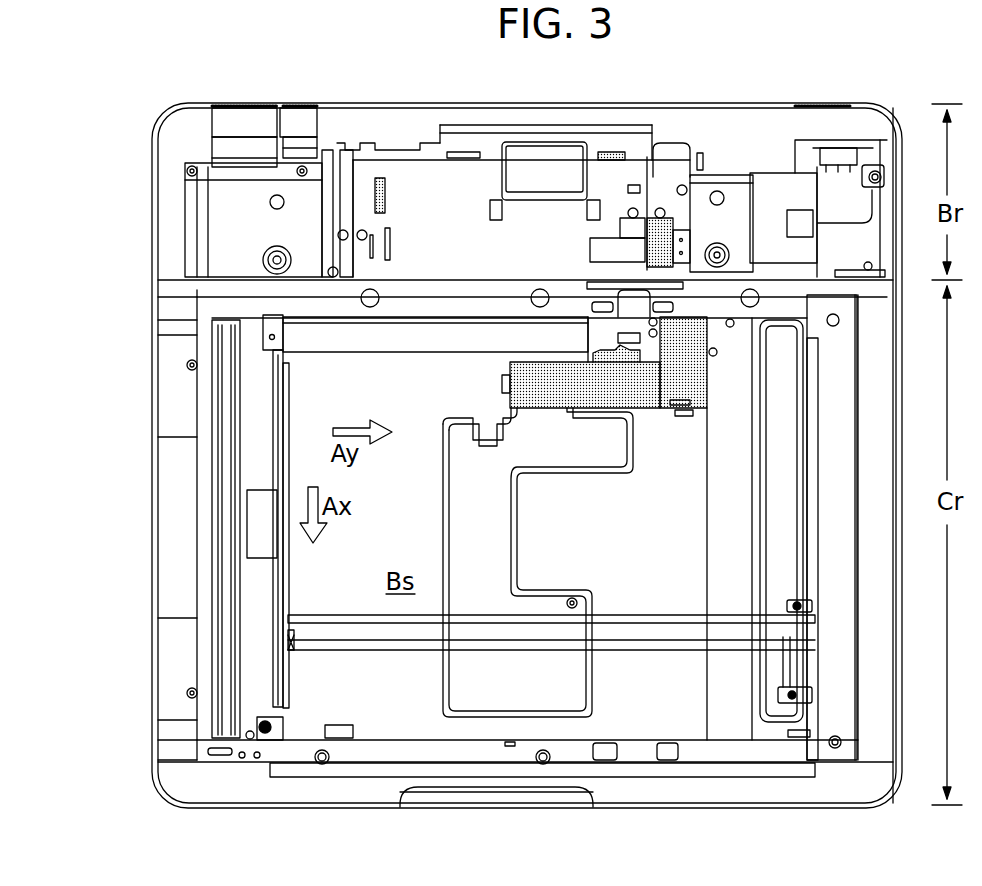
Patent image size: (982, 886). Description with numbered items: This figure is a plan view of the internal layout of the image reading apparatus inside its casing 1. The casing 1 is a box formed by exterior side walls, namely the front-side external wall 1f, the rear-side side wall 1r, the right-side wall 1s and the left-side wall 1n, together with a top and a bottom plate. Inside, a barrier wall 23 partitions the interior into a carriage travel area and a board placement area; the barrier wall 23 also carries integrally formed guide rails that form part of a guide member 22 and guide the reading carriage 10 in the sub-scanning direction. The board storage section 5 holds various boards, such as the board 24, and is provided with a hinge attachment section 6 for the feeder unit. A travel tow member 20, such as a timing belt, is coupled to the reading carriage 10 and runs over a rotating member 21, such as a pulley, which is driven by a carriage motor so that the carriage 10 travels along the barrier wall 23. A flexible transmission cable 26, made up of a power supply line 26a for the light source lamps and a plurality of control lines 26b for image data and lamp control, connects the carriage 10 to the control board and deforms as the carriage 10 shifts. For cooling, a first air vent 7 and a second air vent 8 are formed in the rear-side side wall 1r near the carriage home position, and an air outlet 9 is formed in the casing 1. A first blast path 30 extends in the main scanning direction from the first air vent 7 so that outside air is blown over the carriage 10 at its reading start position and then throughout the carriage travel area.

The casing 1 is at (130, 380).
The left-side wall 1n is at (152, 602).
The right-side wall 1s is at (907, 663).
The front-side external wall 1f is at (745, 808).
The rear-side side wall 1r is at (480, 108).
The board storage section 5 is at (677, 134).
The hinge attachment section 6 is at (237, 232).
The first air vent 7 is at (235, 104).
The second air vent 8 is at (292, 104).
The air outlet 9 is at (832, 104).
The reading carriage 10 is at (262, 402).
The travel tow member 20 is at (630, 652).
The rotating member 21 is at (300, 650).
The guide member 22 is at (658, 616).
The barrier wall 23 is at (473, 290).
The main board 24 is at (413, 177).
The transmission cable 26 is at (393, 352).
The power supply line 26a is at (623, 233).
The control lines 26b is at (590, 245).
The first blast path 30 is at (650, 408).